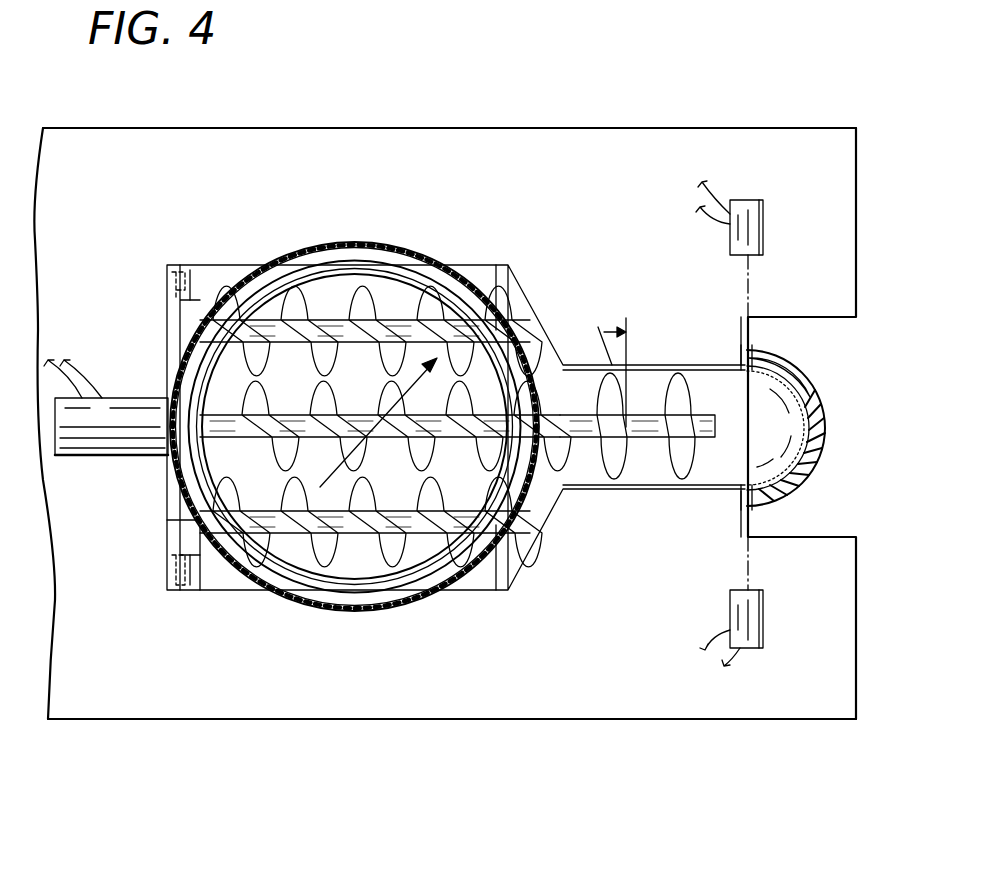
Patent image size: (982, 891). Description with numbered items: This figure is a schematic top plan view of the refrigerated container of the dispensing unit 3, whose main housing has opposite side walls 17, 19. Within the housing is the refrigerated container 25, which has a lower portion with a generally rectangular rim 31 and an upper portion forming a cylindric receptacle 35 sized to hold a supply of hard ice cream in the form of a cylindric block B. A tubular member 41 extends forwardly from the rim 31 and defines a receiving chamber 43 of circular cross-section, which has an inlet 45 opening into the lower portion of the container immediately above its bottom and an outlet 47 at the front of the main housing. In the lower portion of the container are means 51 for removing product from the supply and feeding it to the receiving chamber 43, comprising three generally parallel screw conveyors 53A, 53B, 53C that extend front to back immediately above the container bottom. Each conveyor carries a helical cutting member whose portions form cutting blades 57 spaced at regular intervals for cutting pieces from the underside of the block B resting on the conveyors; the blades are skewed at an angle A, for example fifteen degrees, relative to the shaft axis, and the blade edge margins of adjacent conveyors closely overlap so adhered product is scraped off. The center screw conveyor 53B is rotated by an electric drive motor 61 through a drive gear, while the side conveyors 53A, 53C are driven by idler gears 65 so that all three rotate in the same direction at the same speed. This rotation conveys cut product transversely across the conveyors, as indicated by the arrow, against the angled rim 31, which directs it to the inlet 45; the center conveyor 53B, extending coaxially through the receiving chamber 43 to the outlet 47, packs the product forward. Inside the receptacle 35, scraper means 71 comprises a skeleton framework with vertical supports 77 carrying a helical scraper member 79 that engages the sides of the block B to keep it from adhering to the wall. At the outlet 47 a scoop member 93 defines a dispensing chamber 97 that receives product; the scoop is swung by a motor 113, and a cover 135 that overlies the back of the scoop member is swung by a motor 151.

The dispensing unit 3 is at (596, 108).
The side wall 17 is at (357, 722).
The side wall 19 is at (352, 128).
The refrigerated container 25 is at (544, 256).
The rim 31 is at (200, 265).
The cylindric receptacle 35 is at (395, 612).
The tubular member 41 is at (632, 492).
The receiving chamber 43 is at (655, 378).
The inlet 45 is at (573, 380).
The outlet 47 is at (718, 375).
The means for removing product 51 is at (396, 302).
The screw conveyor 53A is at (327, 285).
The center screw conveyor 53B is at (237, 457).
The screw conveyor 53C is at (317, 583).
The cutting blades 57 is at (588, 457).
The electric drive motor 61 is at (118, 397).
The idler gears 65 is at (167, 317).
The scraper means 71 is at (248, 595).
The vertical supports 77 is at (240, 292).
The helical scraper member 79 is at (430, 593).
The scoop member 93 is at (826, 418).
The dispensing chamber 97 is at (782, 447).
The motor 113 is at (763, 225).
The cover 135 is at (858, 362).
The motor 151 is at (768, 618).
The angle A is at (614, 330).
The block of frozen food product B is at (353, 617).